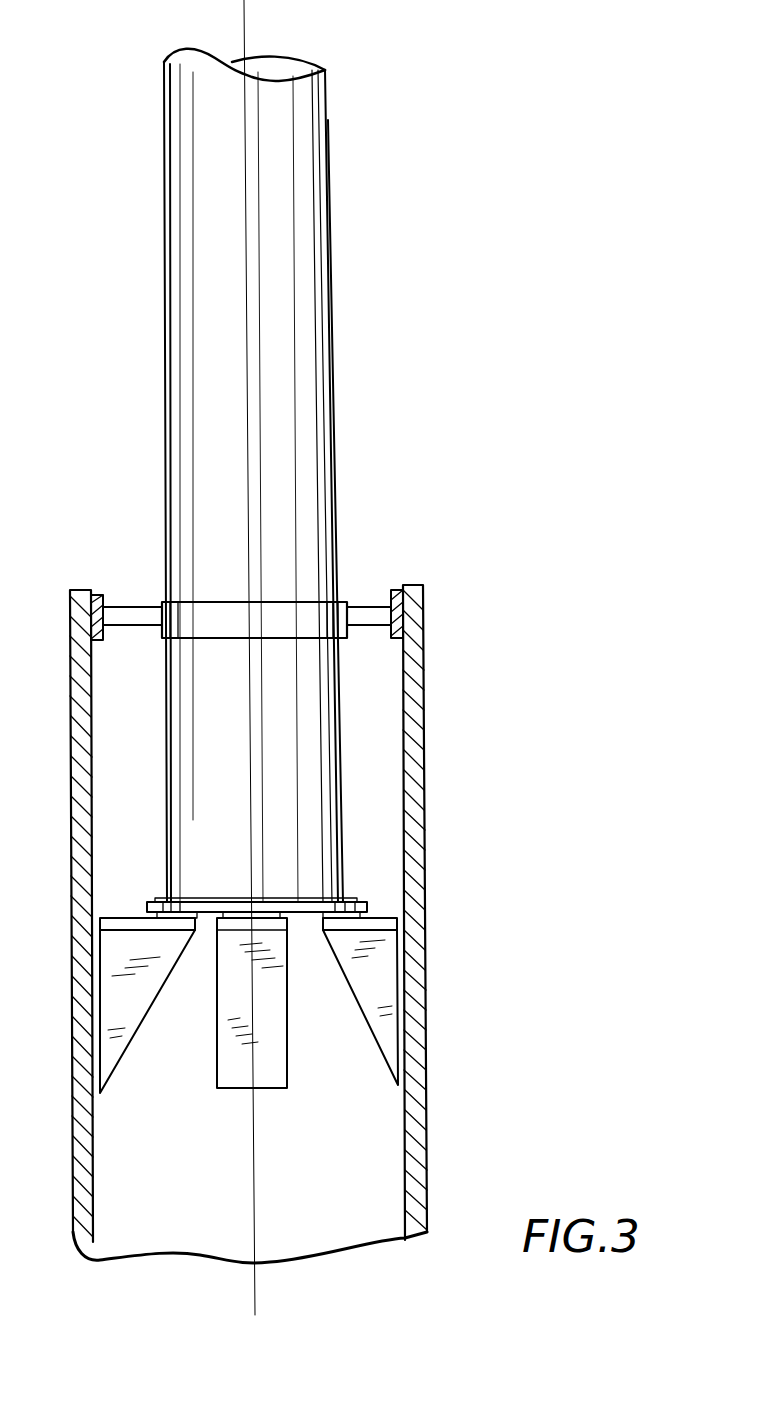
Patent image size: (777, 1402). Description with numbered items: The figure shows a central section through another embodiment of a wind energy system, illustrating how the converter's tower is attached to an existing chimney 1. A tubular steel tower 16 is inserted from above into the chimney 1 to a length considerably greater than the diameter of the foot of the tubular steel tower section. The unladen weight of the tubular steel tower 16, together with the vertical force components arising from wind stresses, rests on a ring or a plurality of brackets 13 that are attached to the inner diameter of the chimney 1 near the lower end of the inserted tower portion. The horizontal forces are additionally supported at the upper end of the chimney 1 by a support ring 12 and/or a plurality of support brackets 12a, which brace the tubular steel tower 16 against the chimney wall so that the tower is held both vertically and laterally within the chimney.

The chimney 1 is at (425, 795).
The support ring 12 is at (287, 615).
The support brackets 12a is at (373, 613).
The bracket 13 is at (385, 950).
The tubular steel tower 16 is at (303, 238).